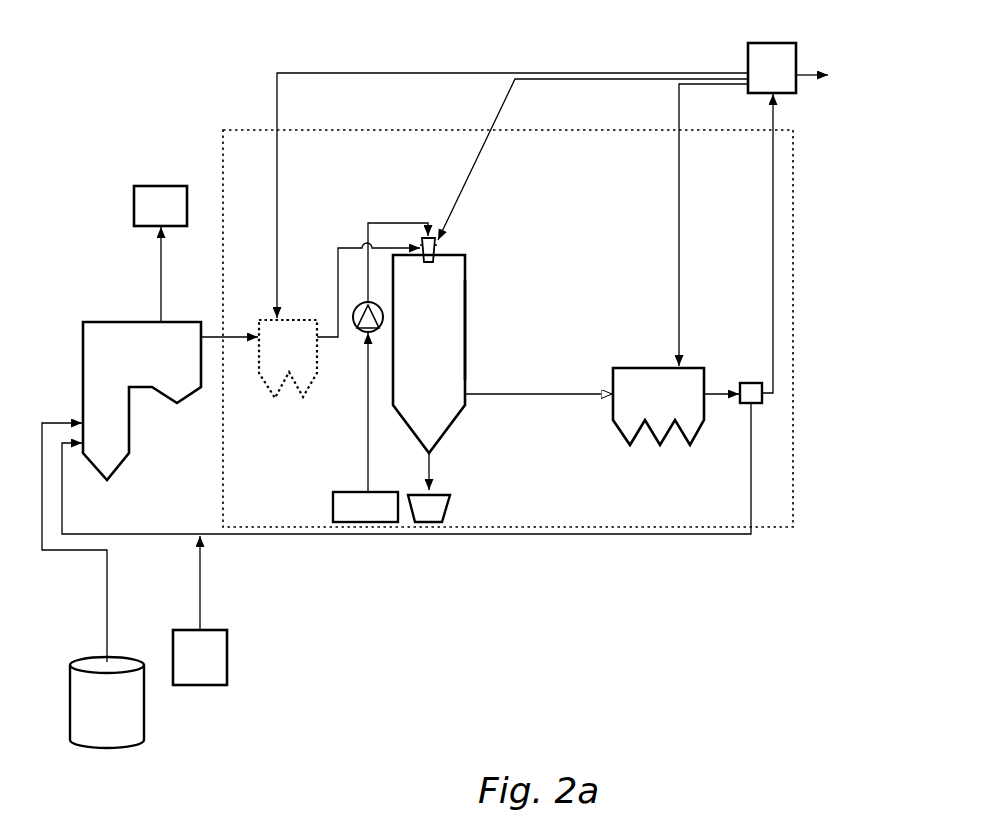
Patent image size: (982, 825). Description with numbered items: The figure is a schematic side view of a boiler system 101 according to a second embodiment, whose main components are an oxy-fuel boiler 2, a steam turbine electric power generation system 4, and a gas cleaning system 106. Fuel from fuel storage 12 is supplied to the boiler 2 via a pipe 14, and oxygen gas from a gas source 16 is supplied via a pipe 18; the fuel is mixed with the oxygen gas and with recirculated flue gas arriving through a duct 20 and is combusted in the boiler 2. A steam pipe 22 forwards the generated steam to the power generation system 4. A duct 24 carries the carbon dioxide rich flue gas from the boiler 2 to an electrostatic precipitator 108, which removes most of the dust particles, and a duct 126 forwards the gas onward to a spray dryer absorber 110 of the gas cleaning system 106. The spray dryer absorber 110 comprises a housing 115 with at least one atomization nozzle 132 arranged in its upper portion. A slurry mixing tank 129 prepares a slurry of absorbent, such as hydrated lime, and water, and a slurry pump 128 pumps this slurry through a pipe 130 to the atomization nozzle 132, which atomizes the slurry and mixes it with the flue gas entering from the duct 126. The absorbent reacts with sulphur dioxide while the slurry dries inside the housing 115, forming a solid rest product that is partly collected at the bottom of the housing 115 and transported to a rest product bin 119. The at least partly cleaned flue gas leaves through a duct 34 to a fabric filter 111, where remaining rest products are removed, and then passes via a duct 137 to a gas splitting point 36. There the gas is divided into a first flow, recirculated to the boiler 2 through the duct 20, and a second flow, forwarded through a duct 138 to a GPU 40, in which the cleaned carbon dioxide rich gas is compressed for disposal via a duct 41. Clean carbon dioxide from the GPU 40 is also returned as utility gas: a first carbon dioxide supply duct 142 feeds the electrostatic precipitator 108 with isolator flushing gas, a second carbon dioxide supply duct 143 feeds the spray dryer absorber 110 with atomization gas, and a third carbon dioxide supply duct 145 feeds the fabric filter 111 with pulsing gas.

The boiler system 101 is at (98, 85).
The boiler 2 is at (95, 387).
The steam turbine electric power generation system 4 is at (134, 207).
The fuel storage 12 is at (135, 708).
The pipe 14 is at (107, 565).
The gas source 16 is at (218, 652).
The pipe 18 is at (202, 578).
The duct 20 is at (573, 536).
The steam pipe 22 is at (161, 278).
The duct 24 is at (215, 332).
The duct 34 is at (525, 396).
The gas splitting point 36 is at (752, 383).
The GPU 40 is at (748, 48).
The duct 41 is at (810, 72).
The gas cleaning system 106 is at (238, 128).
The electrostatic precipitator 108 is at (268, 318).
The spray dryer absorber 110 is at (460, 250).
The fabric filter 111 is at (628, 366).
The housing 115 is at (468, 313).
The rest product bin 119 is at (440, 510).
The duct 126 is at (336, 282).
The slurry pump 128 is at (364, 334).
The slurry mixing tank 129 is at (364, 525).
The pipe 130 is at (366, 420).
The atomization nozzle 132 is at (431, 234).
The duct 137 is at (710, 400).
The duct 138 is at (773, 265).
The first carbon dioxide supply duct 142 is at (305, 72).
The second carbon dioxide supply duct 143 is at (490, 133).
The third carbon dioxide supply duct 145 is at (679, 152).